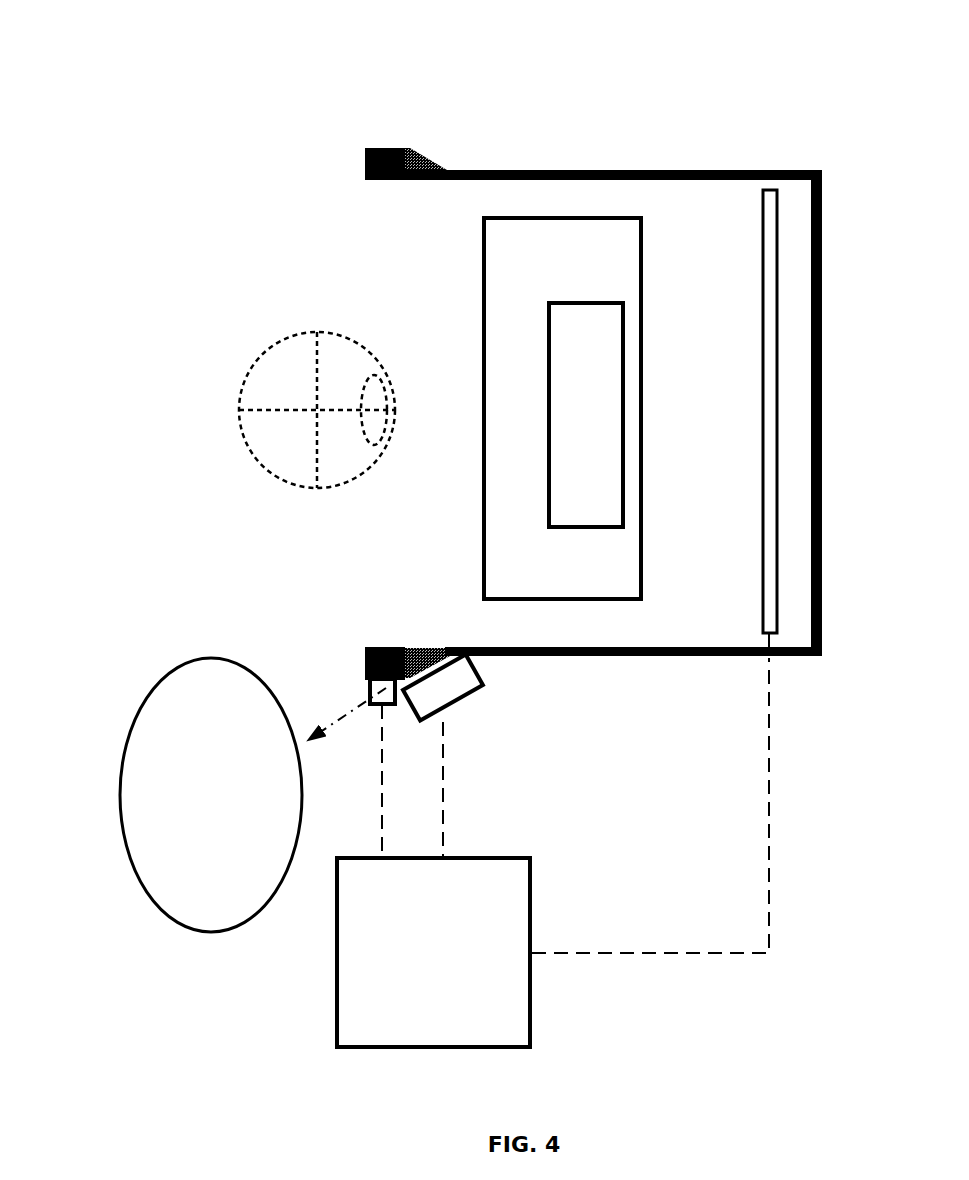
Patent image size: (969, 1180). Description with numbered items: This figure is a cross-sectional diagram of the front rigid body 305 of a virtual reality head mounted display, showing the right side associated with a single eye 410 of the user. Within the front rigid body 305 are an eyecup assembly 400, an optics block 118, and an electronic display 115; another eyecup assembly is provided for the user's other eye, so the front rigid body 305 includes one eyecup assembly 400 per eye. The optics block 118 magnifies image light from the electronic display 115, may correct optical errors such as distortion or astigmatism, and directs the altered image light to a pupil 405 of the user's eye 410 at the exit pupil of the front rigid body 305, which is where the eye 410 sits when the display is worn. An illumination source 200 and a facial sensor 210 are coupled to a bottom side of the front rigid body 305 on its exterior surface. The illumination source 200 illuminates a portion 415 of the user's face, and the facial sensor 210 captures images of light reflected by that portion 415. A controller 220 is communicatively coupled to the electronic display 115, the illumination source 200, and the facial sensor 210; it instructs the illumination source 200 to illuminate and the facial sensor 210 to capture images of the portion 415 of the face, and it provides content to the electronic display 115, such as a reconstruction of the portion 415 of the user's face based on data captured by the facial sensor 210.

The front rigid body 305 is at (669, 168).
The electronic display 115 is at (774, 200).
The eyecup assembly 400 is at (549, 254).
The optics block 118 is at (590, 336).
The eye 410 is at (277, 342).
The pupil 405 is at (359, 392).
The illumination source 200 is at (369, 684).
The facial sensor 210 is at (462, 705).
The controller 220 is at (412, 981).
The portion of the user's face 415 is at (119, 800).